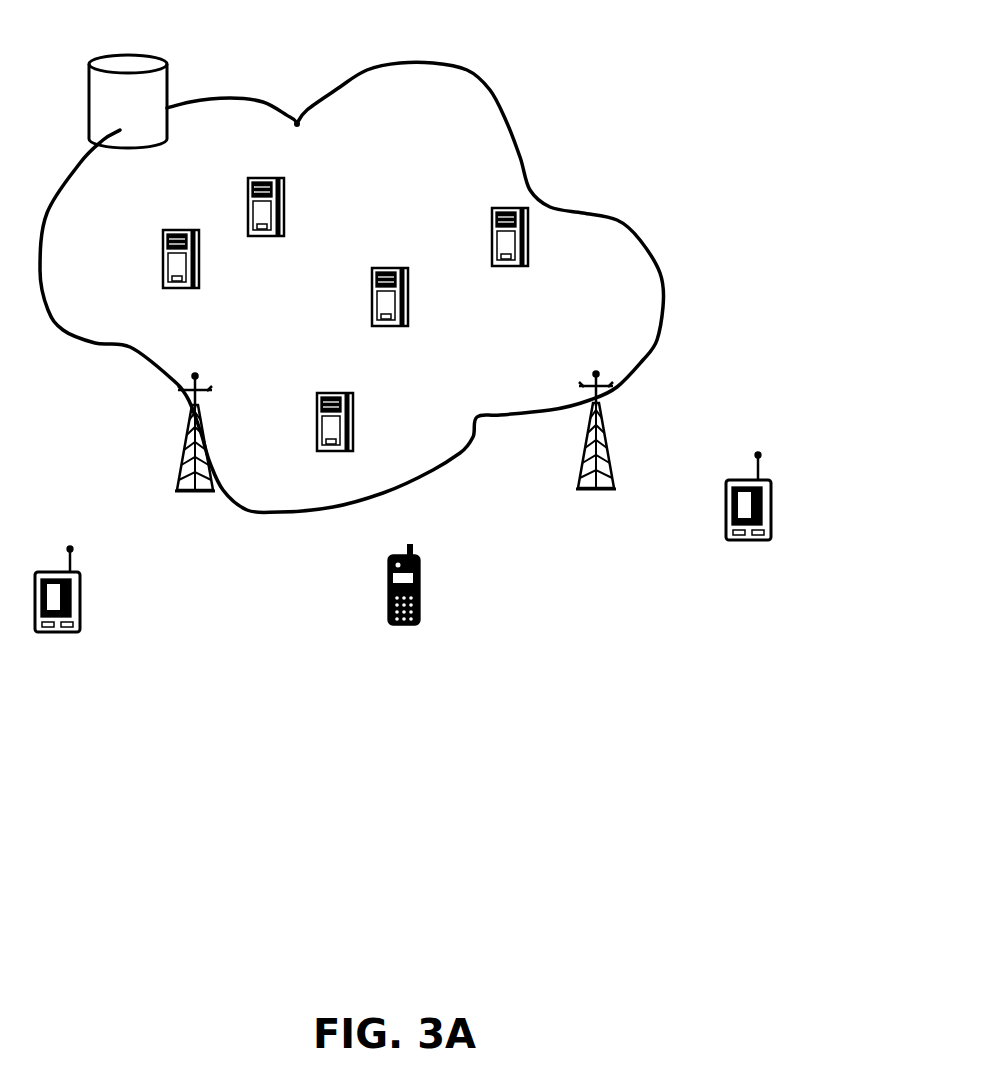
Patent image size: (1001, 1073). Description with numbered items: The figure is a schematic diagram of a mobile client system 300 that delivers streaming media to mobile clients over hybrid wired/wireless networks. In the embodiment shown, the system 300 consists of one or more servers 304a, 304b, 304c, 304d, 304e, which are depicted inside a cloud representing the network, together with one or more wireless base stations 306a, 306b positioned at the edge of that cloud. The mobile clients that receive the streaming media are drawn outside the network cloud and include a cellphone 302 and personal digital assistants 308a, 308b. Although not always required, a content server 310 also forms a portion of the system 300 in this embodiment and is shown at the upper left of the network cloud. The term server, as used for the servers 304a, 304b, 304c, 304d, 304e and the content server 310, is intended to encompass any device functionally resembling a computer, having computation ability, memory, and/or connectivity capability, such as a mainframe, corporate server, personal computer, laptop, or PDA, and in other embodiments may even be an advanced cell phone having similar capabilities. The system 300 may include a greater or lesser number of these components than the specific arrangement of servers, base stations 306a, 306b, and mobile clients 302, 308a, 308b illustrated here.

The system 300 is at (578, 80).
The cellphone 302 is at (420, 591).
The server 304a is at (285, 208).
The server 304b is at (200, 284).
The server 304c is at (354, 421).
The server 304d is at (409, 299).
The server 304e is at (529, 238).
The wireless base station 306a is at (185, 441).
The wireless base station 306b is at (609, 438).
The personal digital assistant 308a is at (82, 607).
The personal digital assistant 308b is at (772, 513).
The content server 310 is at (182, 77).